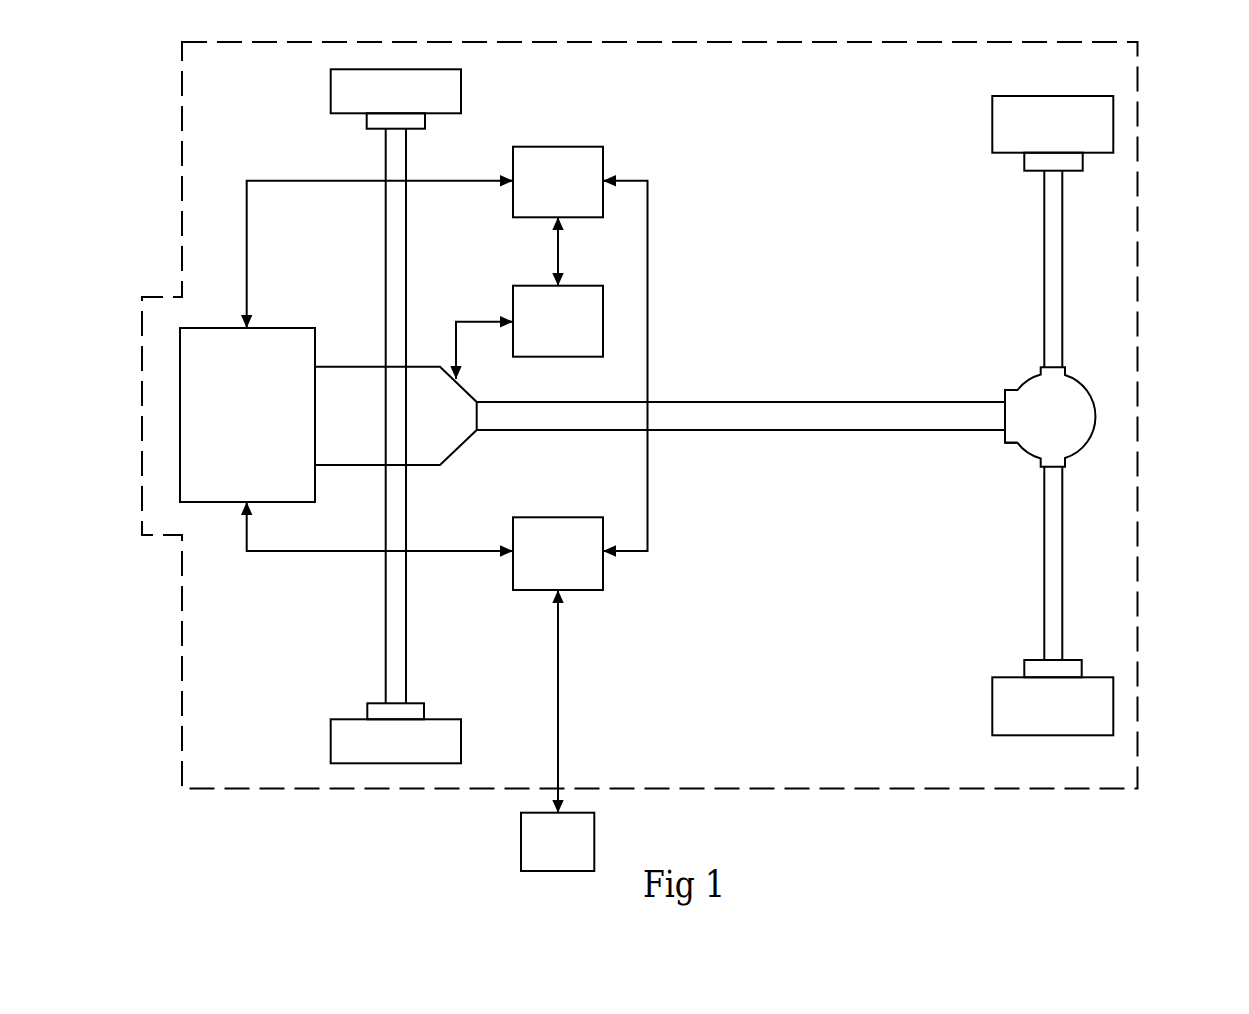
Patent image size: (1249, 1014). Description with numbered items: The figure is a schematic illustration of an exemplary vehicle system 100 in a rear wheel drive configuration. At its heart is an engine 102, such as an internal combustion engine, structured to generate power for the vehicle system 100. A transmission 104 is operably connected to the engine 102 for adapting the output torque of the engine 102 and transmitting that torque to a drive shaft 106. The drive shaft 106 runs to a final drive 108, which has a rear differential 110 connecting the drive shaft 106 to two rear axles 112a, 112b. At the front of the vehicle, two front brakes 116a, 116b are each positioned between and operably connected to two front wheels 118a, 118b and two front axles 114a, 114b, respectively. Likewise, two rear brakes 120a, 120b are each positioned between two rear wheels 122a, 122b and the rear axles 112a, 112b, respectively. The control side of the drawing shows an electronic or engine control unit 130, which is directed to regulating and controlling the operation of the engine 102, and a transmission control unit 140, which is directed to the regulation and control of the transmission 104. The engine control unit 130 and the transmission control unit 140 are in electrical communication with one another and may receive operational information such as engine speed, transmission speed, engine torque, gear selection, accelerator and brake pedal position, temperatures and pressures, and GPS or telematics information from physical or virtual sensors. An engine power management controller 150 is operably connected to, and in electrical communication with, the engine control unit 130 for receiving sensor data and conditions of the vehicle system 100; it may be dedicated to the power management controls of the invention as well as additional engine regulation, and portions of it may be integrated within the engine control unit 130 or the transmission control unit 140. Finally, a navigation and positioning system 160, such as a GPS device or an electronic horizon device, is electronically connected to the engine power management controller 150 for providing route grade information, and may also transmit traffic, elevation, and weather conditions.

The vehicle system 100 is at (1158, 63).
The engine 102 is at (265, 424).
The transmission 104 is at (414, 424).
The drive shaft 106 is at (750, 402).
The final drive 108 is at (1115, 389).
The rear differential 110 is at (1018, 445).
The rear axle 112a is at (1044, 277).
The rear axle 112b is at (1044, 607).
The front axle 114a is at (386, 226).
The front axle 114b is at (386, 634).
The front brake 116a is at (367, 123).
The front brake 116b is at (367, 702).
The front wheel 118a is at (331, 81).
The front wheel 118b is at (331, 730).
The rear brake 120a is at (1024, 169).
The rear brake 120b is at (1024, 660).
The rear wheel 122a is at (992, 121).
The rear wheel 122b is at (992, 704).
The engine control unit 130 is at (592, 147).
The transmission control unit 140 is at (592, 286).
The engine power management controller 150 is at (591, 517).
The navigation and positioning system 160 is at (521, 832).